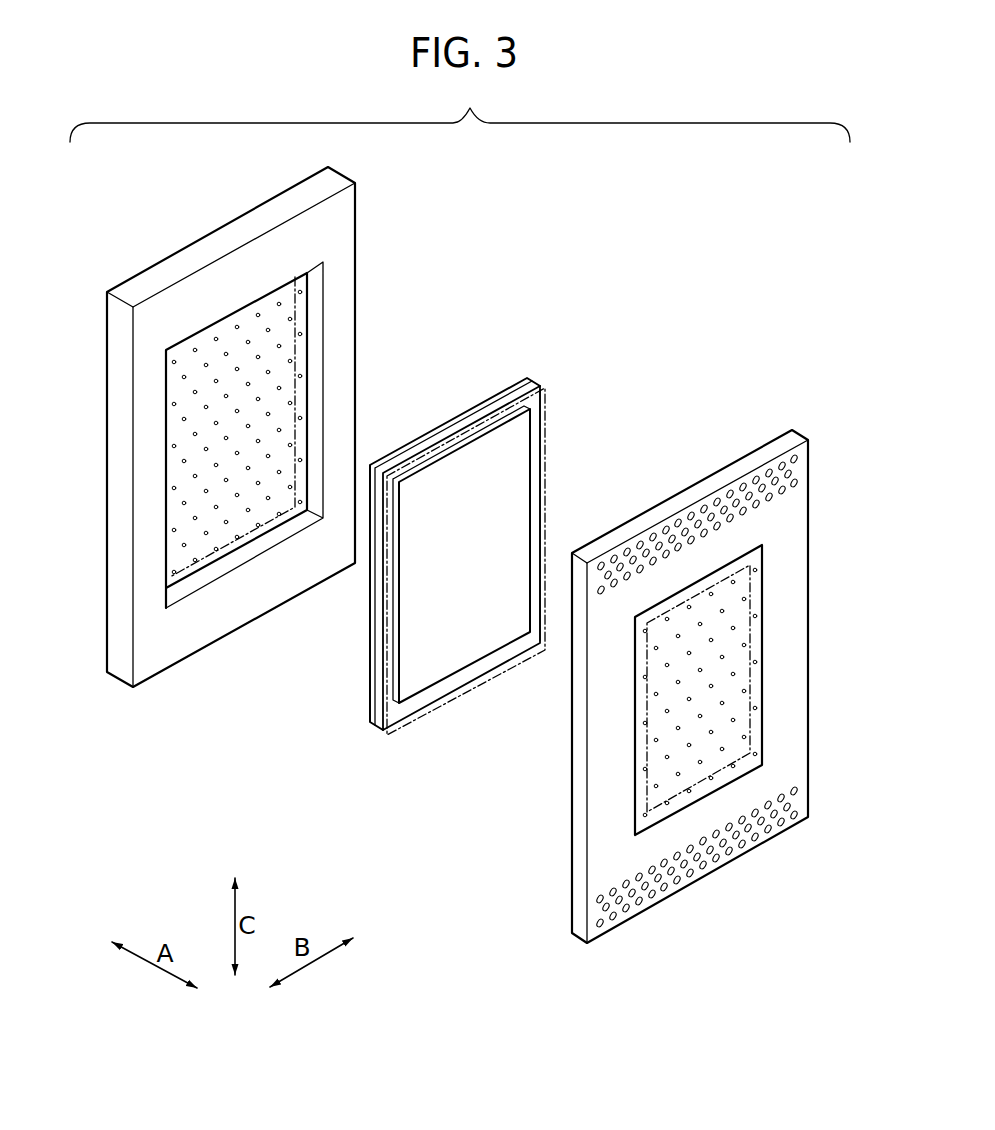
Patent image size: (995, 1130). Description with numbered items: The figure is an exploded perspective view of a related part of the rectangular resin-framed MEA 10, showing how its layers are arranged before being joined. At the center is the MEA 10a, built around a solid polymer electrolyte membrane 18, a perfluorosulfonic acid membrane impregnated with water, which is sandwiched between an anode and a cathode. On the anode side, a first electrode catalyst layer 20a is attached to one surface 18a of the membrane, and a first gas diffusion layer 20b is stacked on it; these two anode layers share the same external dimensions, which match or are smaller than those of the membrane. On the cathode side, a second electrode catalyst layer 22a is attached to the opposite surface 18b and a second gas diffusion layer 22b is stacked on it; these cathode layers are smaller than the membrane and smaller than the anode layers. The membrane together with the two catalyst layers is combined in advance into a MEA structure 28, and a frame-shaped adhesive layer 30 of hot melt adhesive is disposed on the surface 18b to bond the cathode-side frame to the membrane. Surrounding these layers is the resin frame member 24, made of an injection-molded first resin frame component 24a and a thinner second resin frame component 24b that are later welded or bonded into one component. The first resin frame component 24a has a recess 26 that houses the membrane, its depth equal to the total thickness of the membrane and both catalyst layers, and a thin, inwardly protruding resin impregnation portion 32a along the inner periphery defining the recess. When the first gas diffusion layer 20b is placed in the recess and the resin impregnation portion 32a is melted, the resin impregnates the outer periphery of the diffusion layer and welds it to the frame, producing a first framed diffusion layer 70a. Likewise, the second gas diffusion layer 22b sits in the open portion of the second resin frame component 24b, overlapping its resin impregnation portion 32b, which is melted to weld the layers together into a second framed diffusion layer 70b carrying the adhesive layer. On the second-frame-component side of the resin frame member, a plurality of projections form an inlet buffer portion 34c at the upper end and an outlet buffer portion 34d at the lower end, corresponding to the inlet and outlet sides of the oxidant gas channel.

The resin-framed MEA 10 is at (553, 100).
The MEA 10a is at (455, 545).
The solid polymer electrolyte membrane 18 is at (428, 559).
The surface of the solid polymer electrolyte membrane 18a is at (370, 698).
The surface of the solid polymer electrolyte membrane 18b is at (393, 708).
The first electrode catalyst layer 20a is at (452, 560).
The first gas diffusion layer 20b is at (220, 518).
The second electrode catalyst layer 22a is at (470, 640).
The second gas diffusion layer 22b is at (678, 752).
The resin frame member 24 is at (457, 558).
The first resin frame component 24a is at (281, 418).
The second resin frame component 24b is at (656, 674).
The recess 26 is at (317, 372).
The MEA structure 28 is at (545, 401).
The adhesive layer 30 is at (392, 539).
The resin impregnation portion 32a is at (294, 342).
The resin impregnation portion 32b is at (643, 790).
The inlet buffer portion 34c is at (675, 537).
The outlet buffer portion 34d is at (657, 880).
The first framed diffusion layer 70a is at (200, 233).
The second framed diffusion layer 70b is at (627, 507).